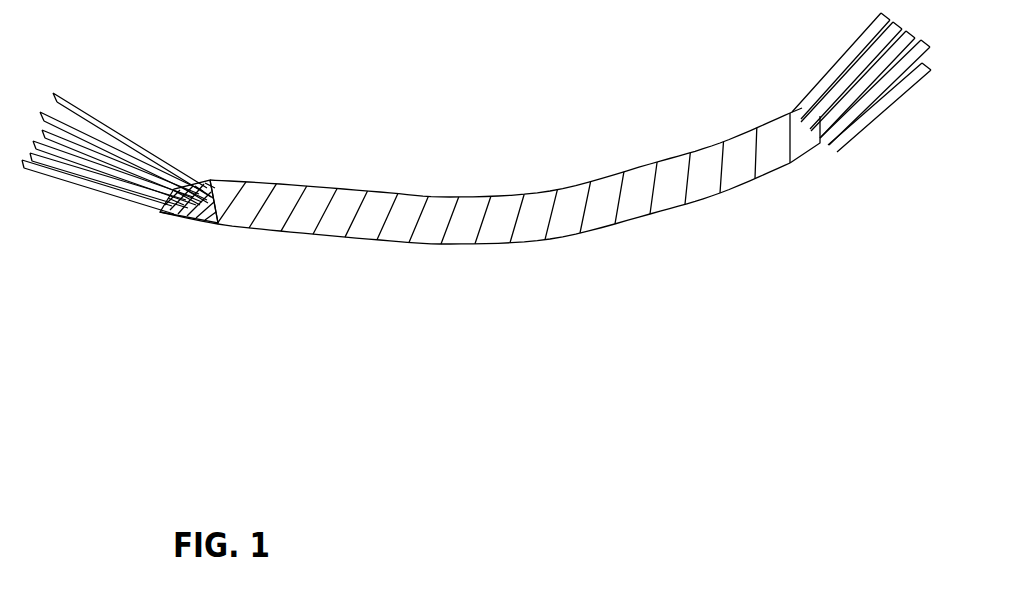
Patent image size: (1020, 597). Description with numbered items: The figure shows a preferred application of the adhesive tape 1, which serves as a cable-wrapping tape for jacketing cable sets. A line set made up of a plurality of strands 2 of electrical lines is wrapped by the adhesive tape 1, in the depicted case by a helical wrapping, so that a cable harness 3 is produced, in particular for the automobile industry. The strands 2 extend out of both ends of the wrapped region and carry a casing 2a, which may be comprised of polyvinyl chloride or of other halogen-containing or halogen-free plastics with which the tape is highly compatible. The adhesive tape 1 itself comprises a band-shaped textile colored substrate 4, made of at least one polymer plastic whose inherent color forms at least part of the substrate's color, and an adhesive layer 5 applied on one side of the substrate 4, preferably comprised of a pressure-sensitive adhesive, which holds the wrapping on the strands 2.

The adhesive tape 1 is at (463, 246).
The strands 2 is at (46, 166).
The casing 2a is at (66, 95).
The cable harness 3 is at (315, 274).
The textile colored substrate 4 is at (182, 166).
The adhesive layer 5 is at (165, 170).